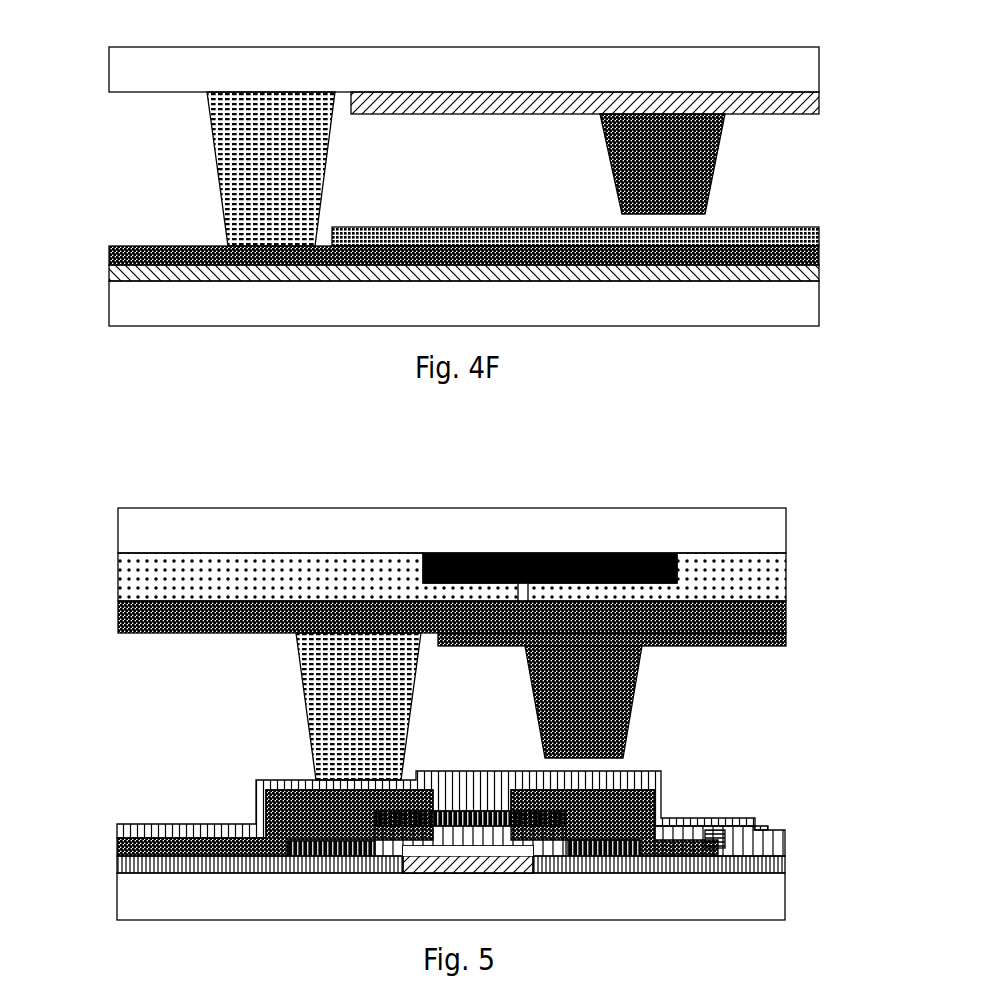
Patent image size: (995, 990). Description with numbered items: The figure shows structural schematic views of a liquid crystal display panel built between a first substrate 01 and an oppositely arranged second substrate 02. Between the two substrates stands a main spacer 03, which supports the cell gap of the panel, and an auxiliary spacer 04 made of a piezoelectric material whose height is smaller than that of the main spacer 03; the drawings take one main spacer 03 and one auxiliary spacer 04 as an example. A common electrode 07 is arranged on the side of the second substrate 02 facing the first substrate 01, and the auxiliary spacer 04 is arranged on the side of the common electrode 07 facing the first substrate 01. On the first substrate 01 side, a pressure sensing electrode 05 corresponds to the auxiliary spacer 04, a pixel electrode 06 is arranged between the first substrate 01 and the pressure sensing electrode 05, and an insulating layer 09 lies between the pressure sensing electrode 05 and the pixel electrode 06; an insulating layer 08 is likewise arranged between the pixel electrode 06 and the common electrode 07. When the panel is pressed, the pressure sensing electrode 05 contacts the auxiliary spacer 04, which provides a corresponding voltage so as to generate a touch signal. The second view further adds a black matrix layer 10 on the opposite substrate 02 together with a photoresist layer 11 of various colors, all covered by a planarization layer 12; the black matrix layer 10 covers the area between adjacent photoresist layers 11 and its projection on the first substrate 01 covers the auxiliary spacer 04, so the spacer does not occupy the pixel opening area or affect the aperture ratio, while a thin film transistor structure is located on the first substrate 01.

In FIG. 4F, the first substrate 01 is at (775, 296).
In FIG. 5, the first substrate 01 is at (755, 888).
In FIG. 4F, the second substrate 02 is at (775, 61).
In FIG. 5, the second substrate 02 is at (755, 517).
In FIG. 4F, the main spacer 03 is at (220, 154).
In FIG. 5, the main spacer 03 is at (298, 689).
In FIG. 4F, the auxiliary spacer 04 is at (703, 172).
In FIG. 5, the auxiliary spacer 04 is at (622, 689).
In FIG. 4F, the pressure sensing electrode 05 is at (811, 229).
In FIG. 5, the pressure sensing electrode 05 is at (778, 633).
In FIG. 4F, the pixel electrode 06 is at (782, 266).
In FIG. 5, the pixel electrode 06 is at (710, 845).
In FIG. 4F, the common electrode 07 is at (811, 96).
In FIG. 5, the common electrode 07 is at (760, 820).
In FIG. 5, the insulating layer 08 is at (752, 831).
In FIG. 4F, the insulating layer 09 is at (811, 250).
In FIG. 5, the black matrix layer 10 is at (632, 545).
In FIG. 5, the photoresist layer 11 is at (132, 567).
In FIG. 5, the planarization layer 12 is at (110, 613).